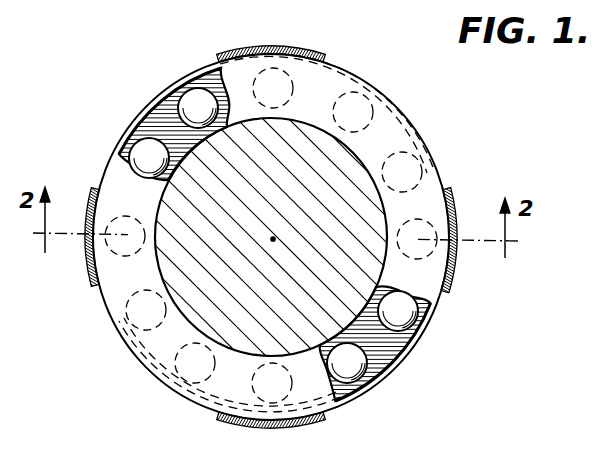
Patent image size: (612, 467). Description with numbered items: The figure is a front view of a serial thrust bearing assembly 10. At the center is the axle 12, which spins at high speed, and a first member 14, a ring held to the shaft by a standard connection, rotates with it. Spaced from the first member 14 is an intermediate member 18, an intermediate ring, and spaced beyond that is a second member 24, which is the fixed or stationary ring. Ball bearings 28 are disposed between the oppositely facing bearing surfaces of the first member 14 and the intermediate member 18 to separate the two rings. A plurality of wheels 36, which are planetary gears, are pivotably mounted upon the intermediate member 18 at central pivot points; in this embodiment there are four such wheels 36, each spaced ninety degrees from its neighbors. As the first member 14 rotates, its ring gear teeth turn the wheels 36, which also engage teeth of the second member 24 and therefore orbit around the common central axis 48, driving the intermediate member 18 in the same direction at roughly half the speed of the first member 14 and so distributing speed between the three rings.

The serial thrust bearing assembly 10 is at (133, 364).
The axle 12 is at (360, 158).
The first member 14 is at (442, 161).
The intermediate member 18 is at (371, 358).
The second member 24 is at (365, 401).
The ball bearings 28 is at (418, 321).
The wheels 36 is at (457, 269).
The common central axis 48 is at (273, 240).